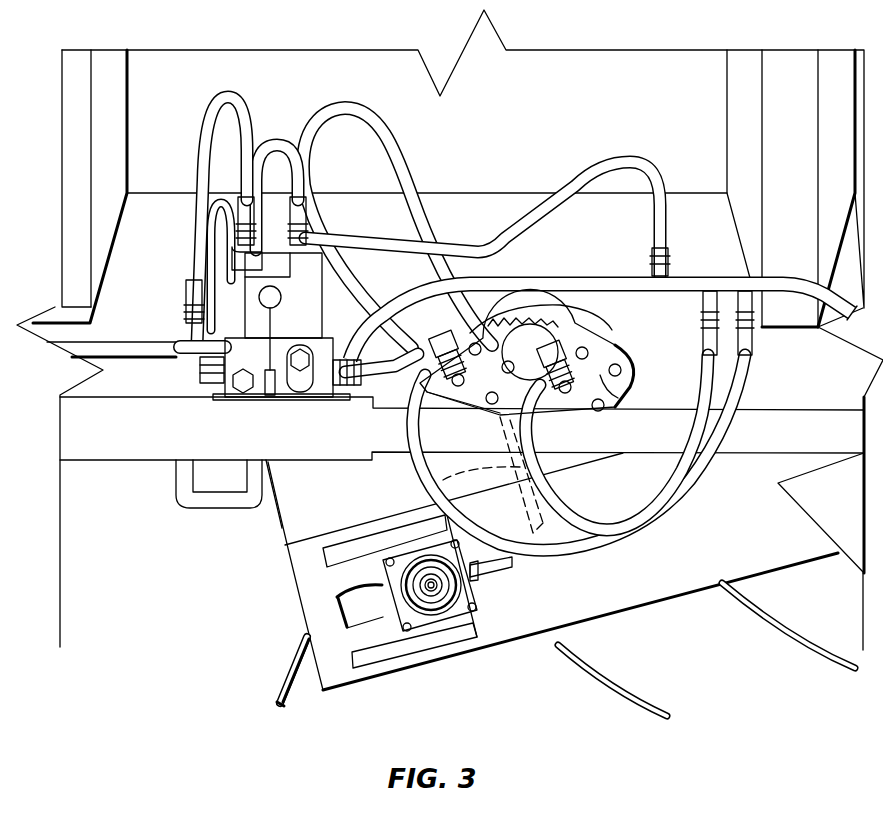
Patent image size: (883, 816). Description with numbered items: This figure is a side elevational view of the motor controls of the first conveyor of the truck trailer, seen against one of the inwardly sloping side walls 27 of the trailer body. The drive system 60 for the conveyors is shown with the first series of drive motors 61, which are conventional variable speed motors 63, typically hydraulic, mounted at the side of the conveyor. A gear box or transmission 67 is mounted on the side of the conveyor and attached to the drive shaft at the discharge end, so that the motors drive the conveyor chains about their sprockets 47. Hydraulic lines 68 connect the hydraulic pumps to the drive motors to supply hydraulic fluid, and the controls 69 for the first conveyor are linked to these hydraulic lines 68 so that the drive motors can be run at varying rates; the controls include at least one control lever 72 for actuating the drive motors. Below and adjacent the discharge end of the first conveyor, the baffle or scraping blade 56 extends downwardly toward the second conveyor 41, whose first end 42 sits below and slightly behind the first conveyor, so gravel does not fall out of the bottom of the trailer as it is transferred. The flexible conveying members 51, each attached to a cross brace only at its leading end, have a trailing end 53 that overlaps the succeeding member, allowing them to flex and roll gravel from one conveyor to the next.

The side wall 27 is at (273, 94).
The second conveyor 41 is at (288, 578).
The first end 42 is at (387, 590).
The sprocket 47 is at (433, 588).
The conveying member 51 is at (296, 665).
The trailing end 53 is at (278, 703).
The baffle 56 is at (445, 480).
The drive system 60 is at (553, 261).
The first series of drive motors 61 is at (614, 338).
The variable speed motor 63 is at (615, 388).
The gear box 67 is at (557, 315).
The hydraulic line 68 is at (133, 350).
The controls 69 is at (250, 389).
The control lever 72 is at (278, 328).